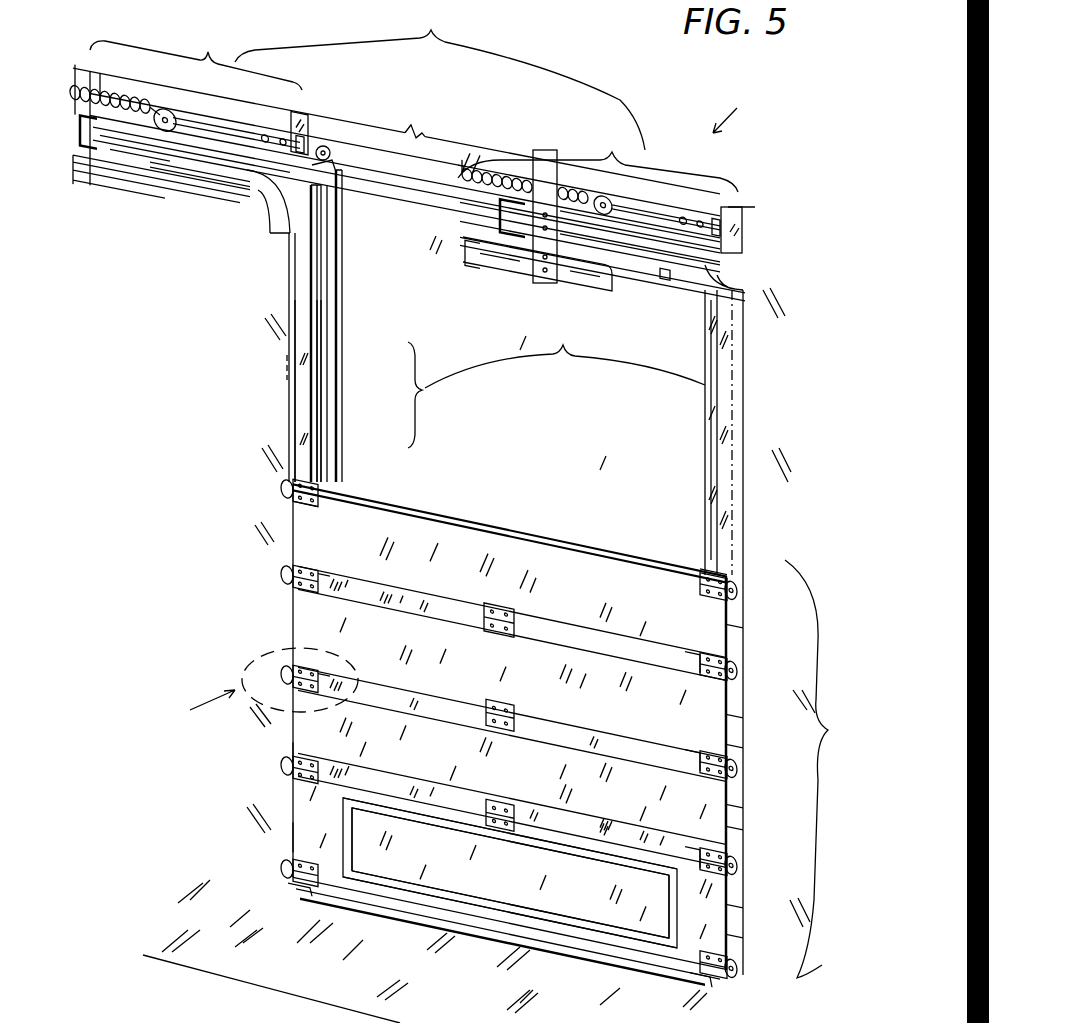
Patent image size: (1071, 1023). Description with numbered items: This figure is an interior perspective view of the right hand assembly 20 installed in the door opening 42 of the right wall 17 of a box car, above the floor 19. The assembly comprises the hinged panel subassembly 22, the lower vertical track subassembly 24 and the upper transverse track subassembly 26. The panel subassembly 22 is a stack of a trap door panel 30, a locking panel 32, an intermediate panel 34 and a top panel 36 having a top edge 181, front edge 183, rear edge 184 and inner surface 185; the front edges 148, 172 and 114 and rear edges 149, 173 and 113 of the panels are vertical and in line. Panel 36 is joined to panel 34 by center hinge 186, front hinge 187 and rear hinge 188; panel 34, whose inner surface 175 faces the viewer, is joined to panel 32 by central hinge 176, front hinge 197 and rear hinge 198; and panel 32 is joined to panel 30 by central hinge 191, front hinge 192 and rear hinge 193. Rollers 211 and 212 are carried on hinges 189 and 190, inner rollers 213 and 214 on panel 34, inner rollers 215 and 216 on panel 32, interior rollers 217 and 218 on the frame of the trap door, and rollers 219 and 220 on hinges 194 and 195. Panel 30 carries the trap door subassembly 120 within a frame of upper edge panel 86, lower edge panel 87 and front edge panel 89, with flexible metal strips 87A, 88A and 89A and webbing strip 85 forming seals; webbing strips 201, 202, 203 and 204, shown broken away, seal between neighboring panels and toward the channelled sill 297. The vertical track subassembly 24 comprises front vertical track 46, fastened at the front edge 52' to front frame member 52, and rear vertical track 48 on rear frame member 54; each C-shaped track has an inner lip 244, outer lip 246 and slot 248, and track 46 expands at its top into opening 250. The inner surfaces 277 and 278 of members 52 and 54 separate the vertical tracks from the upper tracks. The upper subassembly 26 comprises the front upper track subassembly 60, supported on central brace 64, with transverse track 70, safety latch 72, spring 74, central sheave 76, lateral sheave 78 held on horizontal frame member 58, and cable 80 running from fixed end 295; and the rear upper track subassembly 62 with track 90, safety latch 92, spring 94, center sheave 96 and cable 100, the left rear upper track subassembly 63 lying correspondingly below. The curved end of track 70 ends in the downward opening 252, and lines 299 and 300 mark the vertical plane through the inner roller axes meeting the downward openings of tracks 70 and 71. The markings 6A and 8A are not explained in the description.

The curved track section 6A is at (246, 226).
The detail region 8A is at (196, 707).
The right wall 17 is at (218, 837).
The floor 19 is at (450, 1005).
The right hand assembly 20 is at (731, 109).
The right hand hinged panel subassembly 22 is at (805, 633).
The lower vertical right hand track subassembly 24 is at (565, 364).
The upper transverse right hand track subassembly 26 is at (440, 82).
The trap door panel 30 is at (732, 908).
The locking panel 32 is at (732, 806).
The intermediate panel 34 is at (731, 713).
The top panel 36 is at (730, 632).
The door opening 42 is at (563, 467).
The front right hand vertical track 46 is at (429, 395).
The rear right hand vertical track 48 is at (705, 391).
The front right door frame vertical member 52 is at (297, 326).
The front edge of door opening 52' is at (358, 333).
The right rear door frame vertical member 54 is at (745, 514).
The horizontal entrance frame member 58 is at (428, 180).
The right front upper track subassembly 60 is at (196, 58).
The right rear upper track subassembly 62 is at (598, 198).
The left rear upper track subassembly 63 is at (598, 270).
The central brace 64 is at (100, 80).
The right front transverse track 70 is at (178, 172).
The front transverse track 71 is at (156, 196).
The safety latch 72 is at (236, 202).
The spring 74 is at (127, 102).
The central sheave 76 is at (171, 112).
The lateral sheave 78 is at (337, 182).
The front spring cable 80 is at (244, 130).
The seal strip 85 is at (504, 836).
The upper edge panel 86 is at (470, 818).
The lower edge panel 87 is at (500, 937).
The metal strip 87A is at (602, 926).
The metal strip 88A is at (666, 900).
The front edge panel 89 is at (322, 845).
The metal strip 89A is at (350, 850).
The rear transverse track 90 is at (500, 221).
The safety latch 92 is at (664, 258).
The spring 94 is at (570, 200).
The center sheave 96 is at (606, 204).
The rear spring cable 100 is at (672, 208).
The vertical rear edge 113 is at (735, 936).
The vertical front edge 114 is at (292, 839).
The trap door subassembly 120 is at (528, 892).
The front edge 148 is at (290, 740).
The rear edge 149 is at (730, 832).
The front edge 172 is at (290, 636).
The rear edge 173 is at (732, 733).
The inner surface 175 is at (460, 670).
The central hinge 176 is at (506, 710).
The top edge 181 is at (518, 522).
The front edge 183 is at (292, 540).
The rear edge 184 is at (724, 628).
The inner surface 185 is at (578, 590).
The center hinge 186 is at (514, 610).
The front hinge 187 is at (318, 576).
The rear hinge 188 is at (712, 660).
The hinge 189 is at (316, 498).
The hinge 190 is at (729, 590).
The central hinge 191 is at (500, 804).
The front hinge 192 is at (308, 758).
The rear hinge 193 is at (712, 855).
The hinge 194 is at (306, 902).
The hinge 195 is at (706, 976).
The front hinge 197 is at (318, 680).
The rear hinge 198 is at (715, 766).
The webbing strip 201 is at (418, 598).
The webbing strip 202 is at (428, 702).
The webbing strip 203 is at (647, 836).
The webbing strip 204 is at (386, 912).
The roller 211 is at (280, 491).
The roller 212 is at (740, 594).
The inner roller 213 is at (282, 581).
The inner roller 214 is at (746, 664).
The inner roller 215 is at (282, 679).
The inner roller 216 is at (738, 773).
The interior roller 217 is at (282, 768).
The interior roller 218 is at (740, 871).
The roller 219 is at (284, 892).
The roller 220 is at (740, 973).
The inner lip 244 is at (318, 437).
The outer lip 246 is at (318, 360).
The slot 248 is at (318, 398).
The upper vertical track opening 250 is at (331, 150).
The downwardly directed opening 252 is at (280, 236).
The inner surface 277 is at (306, 403).
The inner surface 278 is at (718, 368).
The fixed end 295 is at (284, 130).
The channelled sill 297 is at (436, 932).
The vertical plane extension 299 is at (287, 367).
The vertical plane extension 300 is at (738, 428).